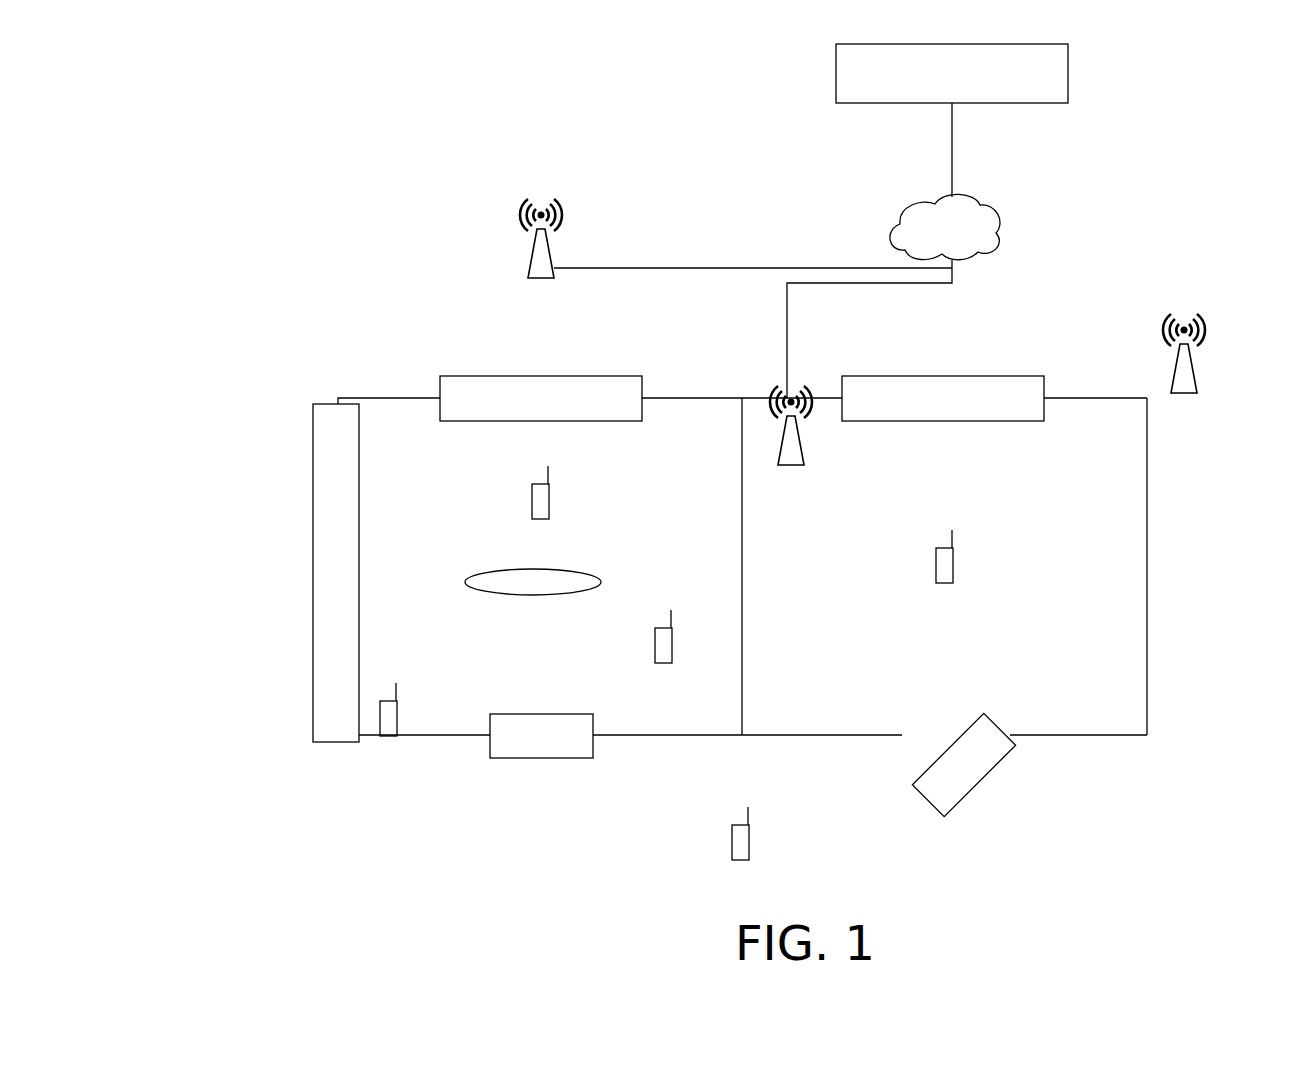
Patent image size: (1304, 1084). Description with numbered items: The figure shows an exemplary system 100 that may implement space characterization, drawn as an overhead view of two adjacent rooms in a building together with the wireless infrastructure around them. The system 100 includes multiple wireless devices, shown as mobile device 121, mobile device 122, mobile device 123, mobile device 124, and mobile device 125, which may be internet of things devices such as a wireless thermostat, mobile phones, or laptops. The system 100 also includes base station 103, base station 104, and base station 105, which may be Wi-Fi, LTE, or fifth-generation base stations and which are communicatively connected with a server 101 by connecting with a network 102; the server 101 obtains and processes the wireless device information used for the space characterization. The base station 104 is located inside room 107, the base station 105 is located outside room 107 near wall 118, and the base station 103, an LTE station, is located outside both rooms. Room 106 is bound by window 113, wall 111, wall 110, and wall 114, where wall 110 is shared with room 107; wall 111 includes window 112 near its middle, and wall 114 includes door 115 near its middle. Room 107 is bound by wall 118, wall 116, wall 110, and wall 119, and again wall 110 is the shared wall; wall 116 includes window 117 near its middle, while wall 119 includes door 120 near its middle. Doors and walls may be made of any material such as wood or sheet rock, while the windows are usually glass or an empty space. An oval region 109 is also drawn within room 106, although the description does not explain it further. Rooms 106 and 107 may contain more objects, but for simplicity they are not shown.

The system 100 is at (163, 122).
The server 101 is at (934, 100).
The network 102 is at (932, 240).
The base station 103 is at (528, 307).
The base station 104 is at (772, 505).
The base station 105 is at (1174, 425).
The room 106 is at (280, 752).
The room 107 is at (1205, 692).
The region 109 is at (533, 582).
The wall 110 is at (742, 582).
The wall 111 is at (373, 398).
The window 112 is at (517, 376).
The window 113 is at (313, 568).
The wall 114 is at (625, 736).
The door 115 is at (530, 758).
The wall 116 is at (1097, 397).
The window 117 is at (955, 376).
The wall 118 is at (1147, 533).
The wall 119 is at (1082, 735).
The door 120 is at (978, 783).
The mobile device 121 is at (549, 494).
The mobile device 122 is at (398, 710).
The mobile device 123 is at (672, 640).
The mobile device 124 is at (953, 560).
The mobile device 125 is at (749, 840).